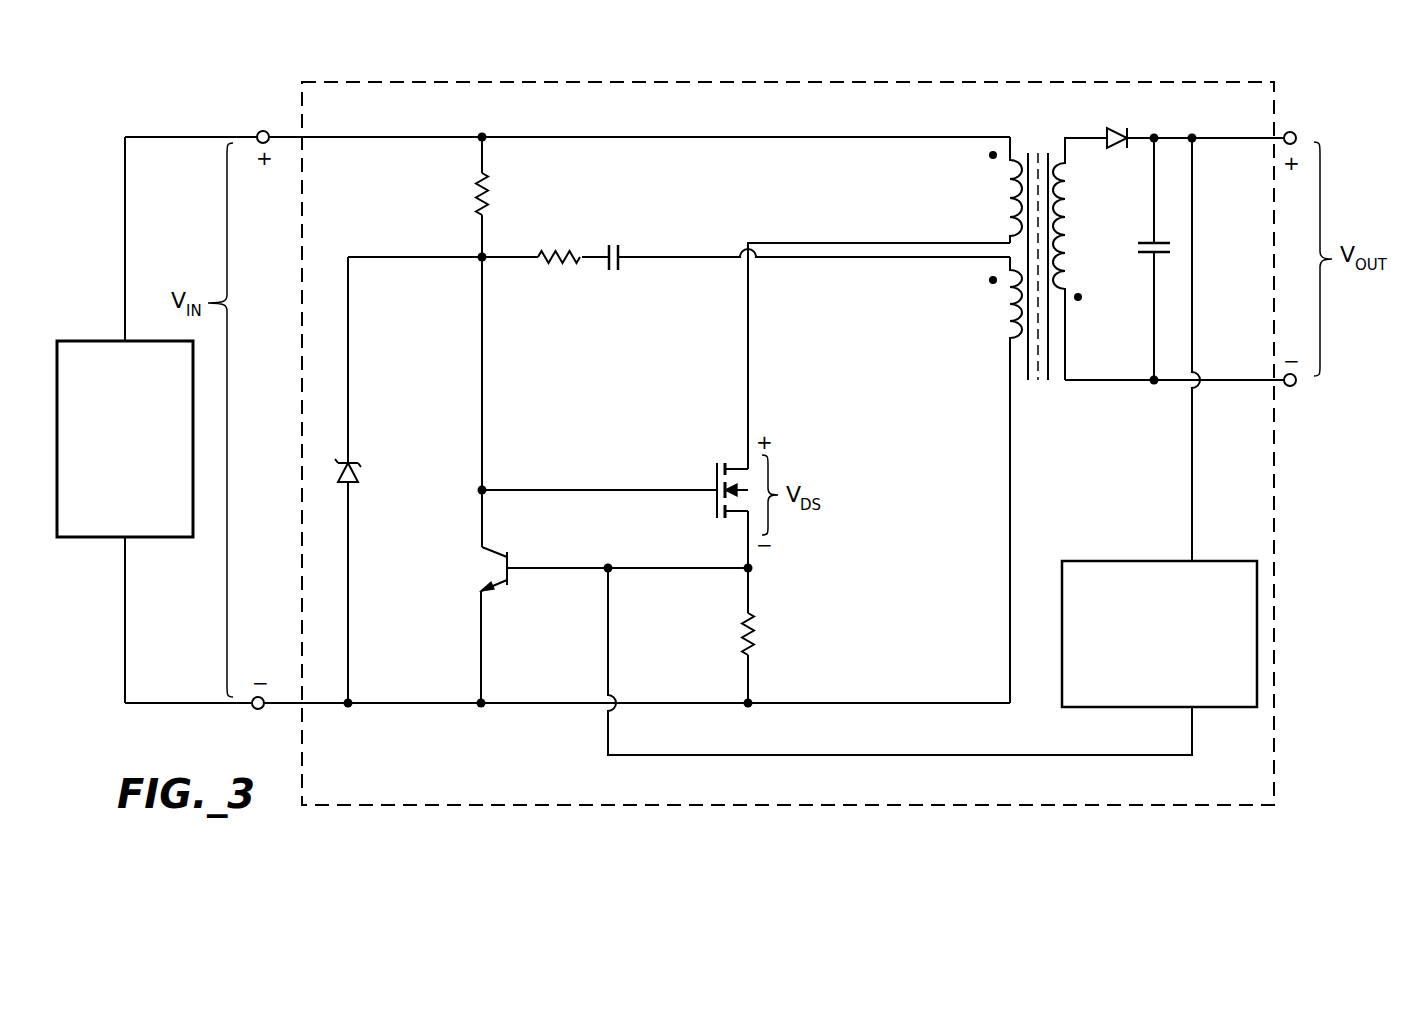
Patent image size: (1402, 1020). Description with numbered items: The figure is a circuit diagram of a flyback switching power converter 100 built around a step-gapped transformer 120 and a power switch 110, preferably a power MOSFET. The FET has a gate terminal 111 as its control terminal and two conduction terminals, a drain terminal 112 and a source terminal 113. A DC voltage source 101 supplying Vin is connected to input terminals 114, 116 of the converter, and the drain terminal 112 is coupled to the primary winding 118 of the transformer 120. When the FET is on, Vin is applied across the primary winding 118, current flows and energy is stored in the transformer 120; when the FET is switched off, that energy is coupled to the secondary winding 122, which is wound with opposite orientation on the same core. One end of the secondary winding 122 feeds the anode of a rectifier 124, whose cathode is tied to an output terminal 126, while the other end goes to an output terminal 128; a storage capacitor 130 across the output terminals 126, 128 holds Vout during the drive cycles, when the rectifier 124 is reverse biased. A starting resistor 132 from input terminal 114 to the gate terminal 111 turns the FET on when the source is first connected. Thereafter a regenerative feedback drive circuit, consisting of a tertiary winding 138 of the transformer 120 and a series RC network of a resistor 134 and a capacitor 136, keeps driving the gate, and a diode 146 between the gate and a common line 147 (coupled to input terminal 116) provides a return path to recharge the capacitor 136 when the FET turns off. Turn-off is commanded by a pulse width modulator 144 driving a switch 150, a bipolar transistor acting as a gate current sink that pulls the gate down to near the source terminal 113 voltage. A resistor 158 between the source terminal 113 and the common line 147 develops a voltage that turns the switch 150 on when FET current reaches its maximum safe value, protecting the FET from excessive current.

The flyback switching power converter 100 is at (480, 803).
The DC voltage source 101 is at (130, 540).
The power switch 110 is at (715, 500).
The gate terminal 111 is at (715, 483).
The drain terminal 112 is at (745, 463).
The source terminal 113 is at (745, 535).
The input terminal 114 is at (258, 132).
The input terminal 116 is at (257, 710).
The primary winding 118 is at (1005, 190).
The step-gapped transformer 120 is at (1042, 144).
The secondary winding 122 is at (1070, 226).
The rectifier 124 is at (1115, 130).
The output terminal 126 is at (1295, 132).
The output terminal 128 is at (1295, 388).
The storage capacitor 130 is at (1148, 258).
The starting resistor 132 is at (474, 195).
The resistor 134 is at (560, 256).
The capacitor 136 is at (620, 265).
The tertiary winding 138 is at (1005, 310).
The pulse width modulator 144 is at (1130, 560).
The diode 146 is at (357, 470).
The common line 147 is at (435, 703).
The switch 150 is at (497, 561).
The resistor 158 is at (757, 640).